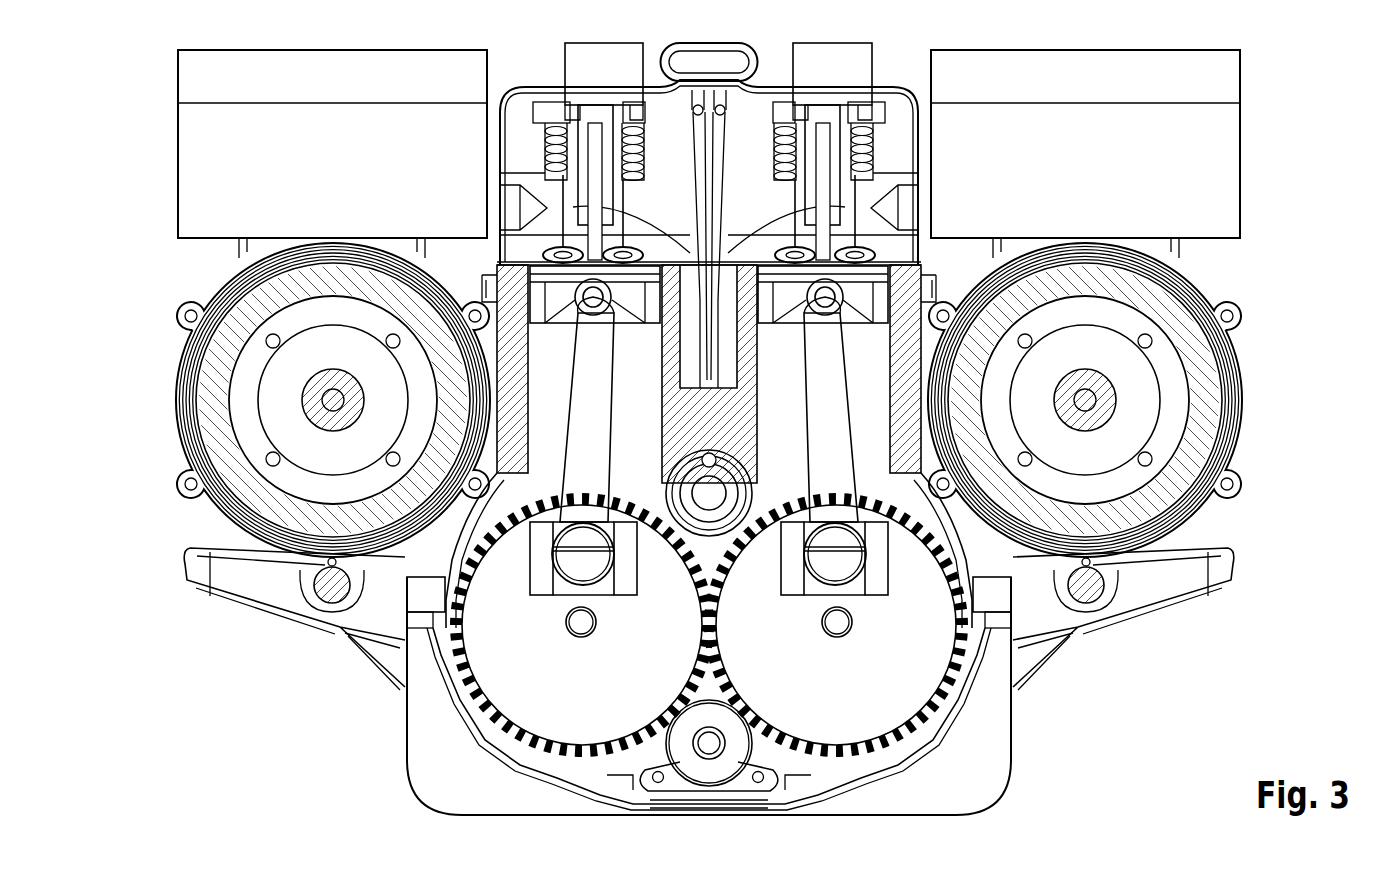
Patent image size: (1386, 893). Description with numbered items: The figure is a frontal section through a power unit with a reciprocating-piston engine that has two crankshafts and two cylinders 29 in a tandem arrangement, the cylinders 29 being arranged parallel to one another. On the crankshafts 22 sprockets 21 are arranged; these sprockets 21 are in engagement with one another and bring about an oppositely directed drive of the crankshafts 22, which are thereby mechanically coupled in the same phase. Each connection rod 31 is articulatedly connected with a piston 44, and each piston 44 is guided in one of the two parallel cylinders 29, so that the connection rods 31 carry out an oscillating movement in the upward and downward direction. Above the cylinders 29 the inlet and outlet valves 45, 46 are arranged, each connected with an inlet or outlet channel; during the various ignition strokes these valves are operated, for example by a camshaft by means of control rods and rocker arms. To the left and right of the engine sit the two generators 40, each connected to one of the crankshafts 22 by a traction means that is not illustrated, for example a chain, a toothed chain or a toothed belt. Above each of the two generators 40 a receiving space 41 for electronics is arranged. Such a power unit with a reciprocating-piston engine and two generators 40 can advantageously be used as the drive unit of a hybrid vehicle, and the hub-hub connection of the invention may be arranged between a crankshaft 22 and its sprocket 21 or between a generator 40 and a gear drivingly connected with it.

The sprocket 21 is at (521, 680).
The crankshaft 22 is at (575, 578).
The cylinder 29 is at (552, 352).
The connection rod 31 is at (590, 420).
The generator 40 is at (208, 398).
The receiving space 41 is at (215, 172).
The piston 44 is at (638, 313).
The inlet valve 45 is at (568, 246).
The outlet valve 46 is at (623, 246).